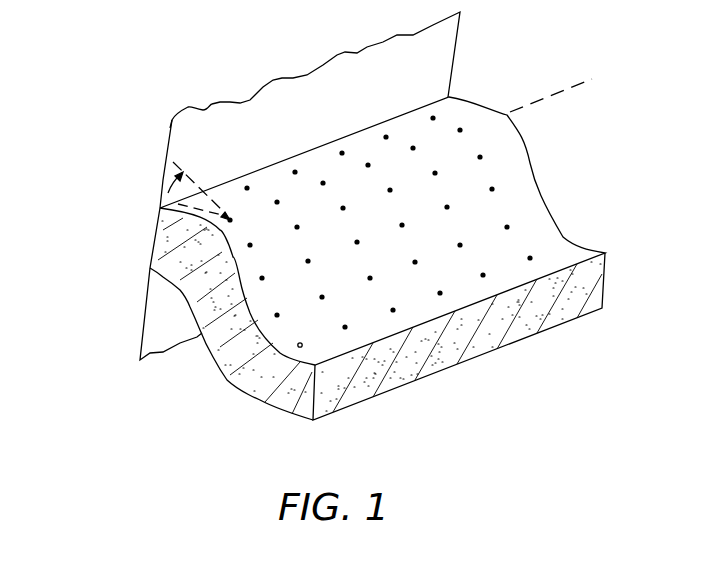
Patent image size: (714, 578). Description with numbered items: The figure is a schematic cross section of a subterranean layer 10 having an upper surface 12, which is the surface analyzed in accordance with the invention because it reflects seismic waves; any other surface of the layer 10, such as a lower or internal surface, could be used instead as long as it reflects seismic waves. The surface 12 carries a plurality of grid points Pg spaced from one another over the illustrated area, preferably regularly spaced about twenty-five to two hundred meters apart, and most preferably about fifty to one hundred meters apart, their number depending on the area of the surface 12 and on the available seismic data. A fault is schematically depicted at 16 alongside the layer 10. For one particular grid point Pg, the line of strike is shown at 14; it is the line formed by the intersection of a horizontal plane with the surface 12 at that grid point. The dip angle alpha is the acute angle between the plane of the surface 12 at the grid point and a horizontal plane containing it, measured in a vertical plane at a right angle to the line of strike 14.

The subterranean layer 10 is at (172, 255).
The upper surface 12 is at (517, 183).
The line of strike 14 is at (560, 88).
The fault 16 is at (447, 33).